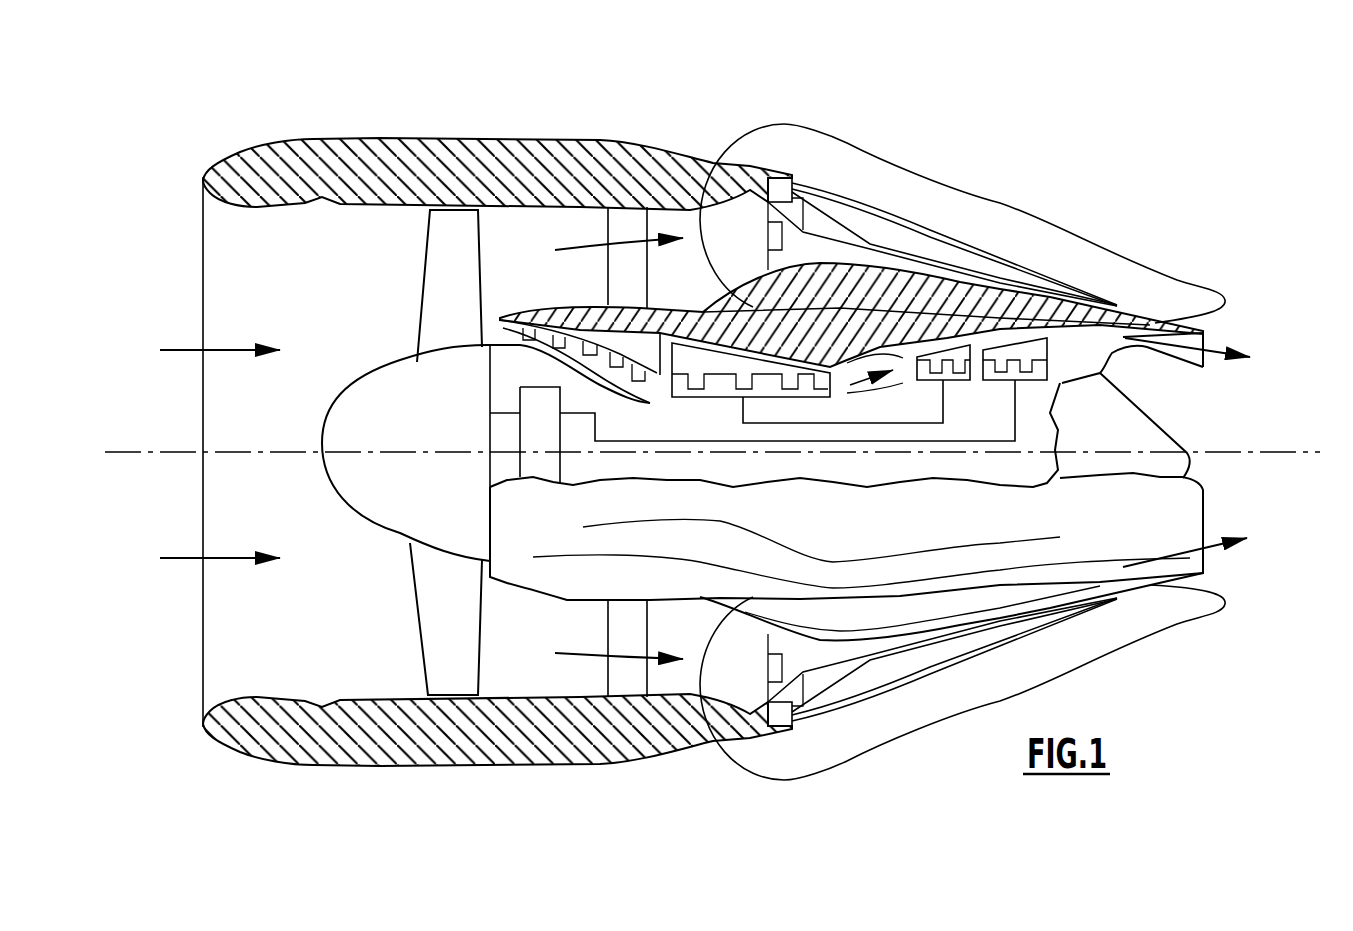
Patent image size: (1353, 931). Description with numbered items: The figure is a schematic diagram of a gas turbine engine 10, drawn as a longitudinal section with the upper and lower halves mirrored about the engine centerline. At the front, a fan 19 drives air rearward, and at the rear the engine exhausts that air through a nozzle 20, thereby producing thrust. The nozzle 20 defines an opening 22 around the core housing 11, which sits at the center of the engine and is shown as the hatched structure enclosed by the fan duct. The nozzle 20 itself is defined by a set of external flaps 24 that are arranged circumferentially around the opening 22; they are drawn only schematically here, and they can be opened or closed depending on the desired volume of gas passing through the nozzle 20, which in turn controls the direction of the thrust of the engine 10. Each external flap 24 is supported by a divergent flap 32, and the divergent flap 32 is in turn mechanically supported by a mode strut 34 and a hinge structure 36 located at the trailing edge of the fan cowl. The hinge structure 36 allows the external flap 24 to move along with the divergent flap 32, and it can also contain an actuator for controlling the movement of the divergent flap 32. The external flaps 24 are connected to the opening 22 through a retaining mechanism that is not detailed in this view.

The gas turbine engine 10 is at (262, 90).
The core housing 11 is at (753, 327).
The fan 19 is at (453, 636).
The nozzle 20 is at (797, 123).
The opening 22 is at (1120, 306).
The external flaps 24 is at (970, 245).
The divergent flap 32 is at (965, 270).
The mode strut 34 is at (867, 223).
The hinge structure 36 is at (781, 188).